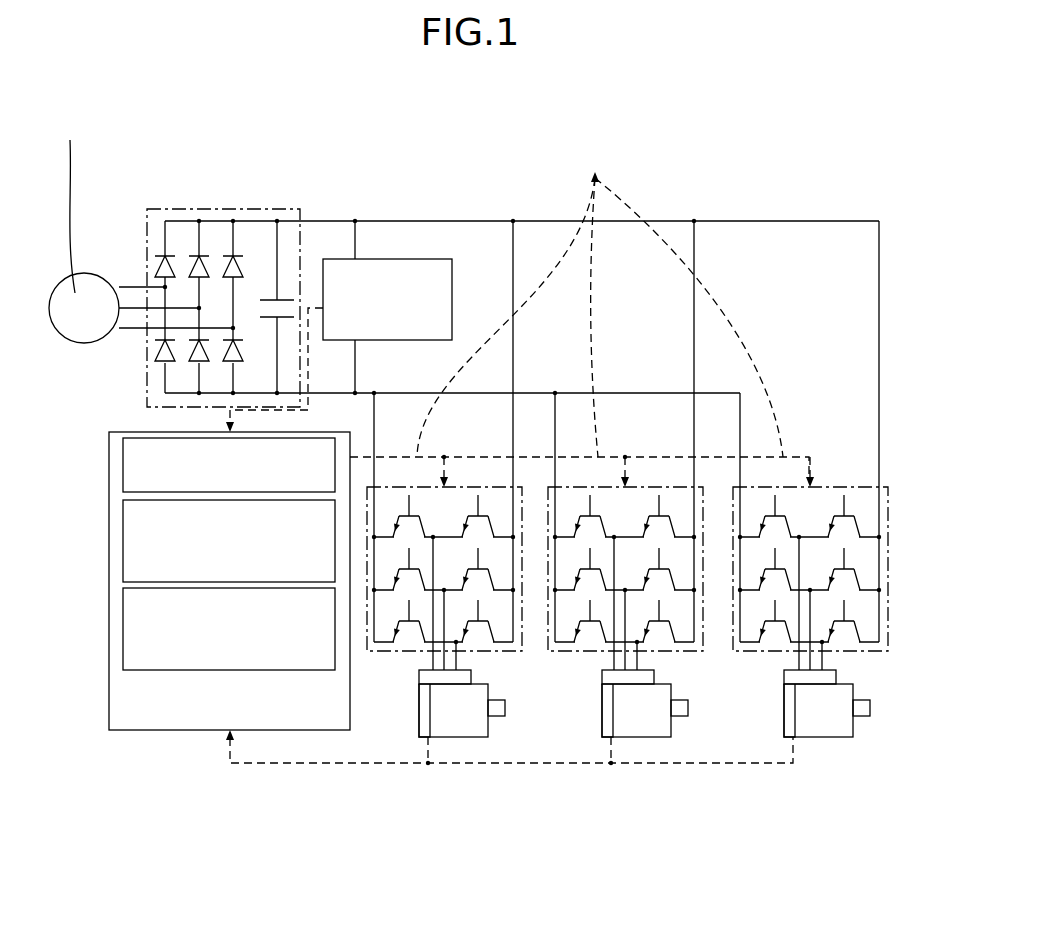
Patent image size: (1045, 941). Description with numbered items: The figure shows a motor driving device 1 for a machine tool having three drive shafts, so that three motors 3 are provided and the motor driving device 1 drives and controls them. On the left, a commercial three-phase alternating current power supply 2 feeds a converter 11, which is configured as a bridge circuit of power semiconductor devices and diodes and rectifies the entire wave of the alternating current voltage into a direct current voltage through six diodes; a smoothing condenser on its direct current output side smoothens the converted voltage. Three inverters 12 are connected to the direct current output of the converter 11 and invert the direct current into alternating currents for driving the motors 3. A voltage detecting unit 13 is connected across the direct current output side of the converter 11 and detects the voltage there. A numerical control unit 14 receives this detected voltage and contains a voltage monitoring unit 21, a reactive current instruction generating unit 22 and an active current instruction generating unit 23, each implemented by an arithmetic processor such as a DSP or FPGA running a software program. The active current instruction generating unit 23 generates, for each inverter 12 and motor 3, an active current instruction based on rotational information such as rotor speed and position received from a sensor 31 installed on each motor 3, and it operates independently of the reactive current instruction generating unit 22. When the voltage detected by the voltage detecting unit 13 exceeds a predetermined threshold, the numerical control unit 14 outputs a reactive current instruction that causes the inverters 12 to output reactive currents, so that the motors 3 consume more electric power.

The motor driving device 1 is at (343, 823).
The commercial three-phase alternating current power supply 2 is at (68, 290).
The motor 3 is at (478, 737).
The converter 11 is at (253, 208).
The inverter 12 is at (405, 651).
The voltage detecting unit 13 is at (452, 298).
The numerical control unit 14 is at (183, 730).
The voltage monitoring unit 21 is at (123, 470).
The reactive current instruction generating unit 22 is at (123, 550).
The active current instruction generating unit 23 is at (123, 630).
The sensor 31 is at (418, 700).